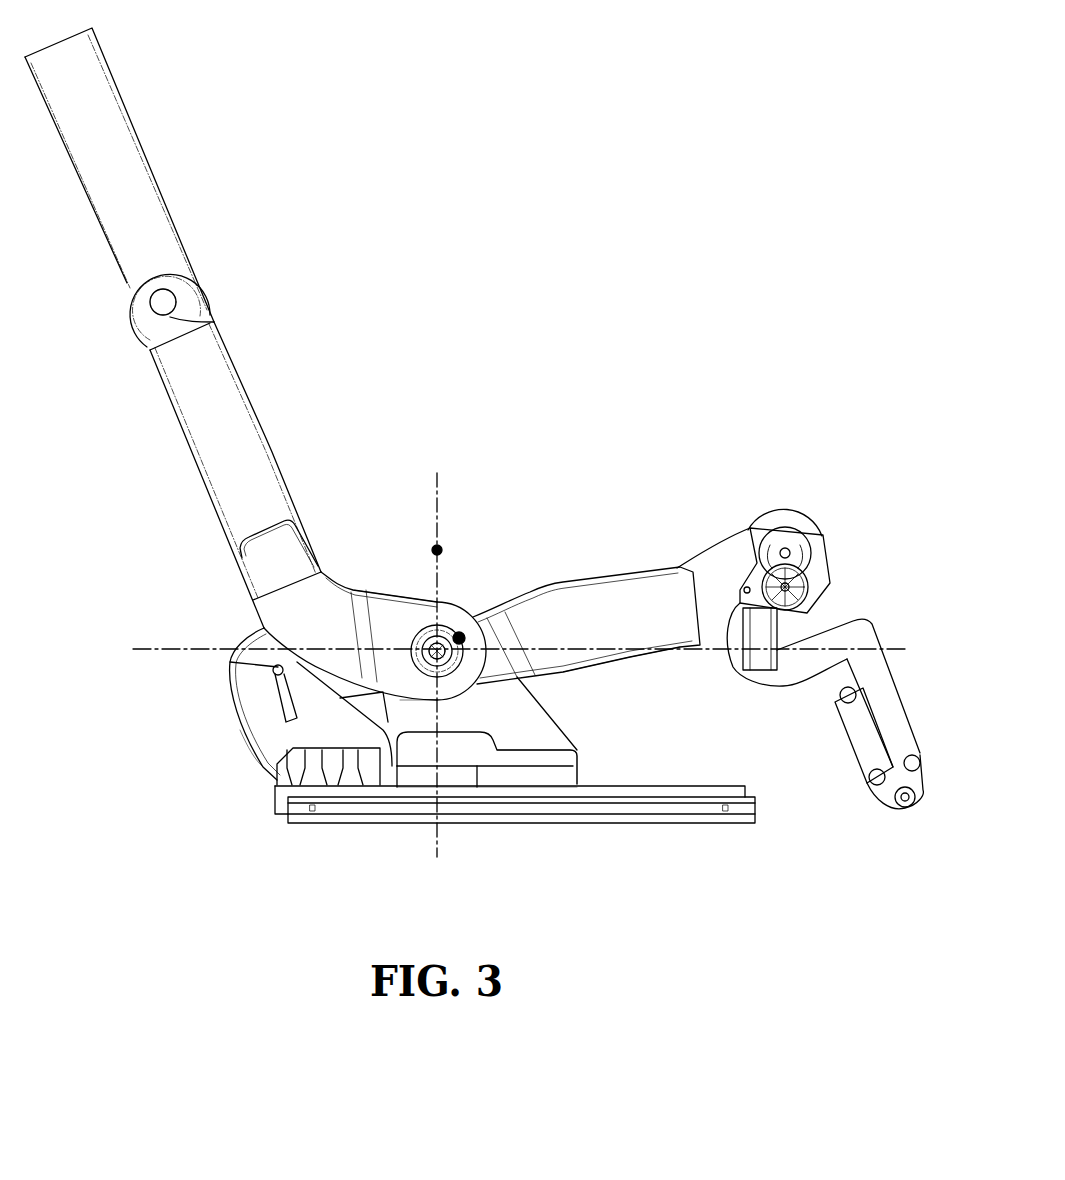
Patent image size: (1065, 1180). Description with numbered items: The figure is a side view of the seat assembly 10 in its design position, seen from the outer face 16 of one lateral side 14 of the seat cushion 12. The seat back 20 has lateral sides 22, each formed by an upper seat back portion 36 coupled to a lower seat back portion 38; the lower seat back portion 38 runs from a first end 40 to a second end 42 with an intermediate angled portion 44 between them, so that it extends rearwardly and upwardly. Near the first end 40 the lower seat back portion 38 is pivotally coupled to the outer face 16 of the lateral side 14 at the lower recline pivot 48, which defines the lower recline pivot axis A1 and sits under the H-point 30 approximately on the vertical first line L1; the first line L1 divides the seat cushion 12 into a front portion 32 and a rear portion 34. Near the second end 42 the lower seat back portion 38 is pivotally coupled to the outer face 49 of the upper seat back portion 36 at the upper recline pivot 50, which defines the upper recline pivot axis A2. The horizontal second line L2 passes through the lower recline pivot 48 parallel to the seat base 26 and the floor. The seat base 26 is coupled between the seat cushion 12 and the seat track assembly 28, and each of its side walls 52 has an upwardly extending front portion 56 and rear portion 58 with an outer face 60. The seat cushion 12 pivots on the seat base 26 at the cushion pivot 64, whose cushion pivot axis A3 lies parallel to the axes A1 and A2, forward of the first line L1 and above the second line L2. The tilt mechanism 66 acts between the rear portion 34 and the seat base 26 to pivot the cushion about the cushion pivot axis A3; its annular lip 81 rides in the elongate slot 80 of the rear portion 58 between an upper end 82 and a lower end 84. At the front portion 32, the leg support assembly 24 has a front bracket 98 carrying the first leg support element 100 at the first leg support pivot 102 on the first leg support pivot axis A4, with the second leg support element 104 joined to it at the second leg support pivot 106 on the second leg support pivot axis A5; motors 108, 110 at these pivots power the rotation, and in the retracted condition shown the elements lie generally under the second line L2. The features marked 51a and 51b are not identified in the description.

The seat assembly 10 is at (392, 268).
The seat cushion 12 is at (613, 503).
The lateral side 14 is at (673, 548).
The outer face 16 is at (586, 625).
The seat back 20 is at (130, 400).
The lateral side 22 is at (155, 428).
The leg support assembly 24 is at (790, 757).
The seat base 26 is at (487, 797).
The seat track assembly 28 is at (526, 813).
The H-point 30 is at (440, 548).
The front portion 32 is at (638, 653).
The rear portion 34 is at (381, 752).
The upper seat back portion 36 is at (128, 103).
The lower seat back portion 38 is at (253, 409).
The first end 40 is at (442, 700).
The second end 42 is at (205, 300).
The intermediate angled portion 44 is at (260, 625).
The lower recline pivot 48 is at (420, 632).
The outer face 49 is at (153, 228).
The upper recline pivot 50 is at (200, 336).
The first surface 51a is at (418, 593).
The second surface 51b is at (148, 299).
The side wall 52 is at (583, 775).
The front portion 56 is at (552, 770).
The rear portion 58 is at (247, 780).
The outer face 60 is at (487, 732).
The cushion pivot 64 is at (463, 633).
The tilt mechanism 66 is at (240, 717).
The elongate slot 80 is at (255, 710).
The annular lip 81 is at (265, 685).
The upper end 82 is at (272, 670).
The lower end 84 is at (263, 773).
The front bracket 98 is at (738, 555).
The first leg support element 100 is at (868, 640).
The first leg support pivot 102 is at (825, 565).
The second leg support element 104 is at (862, 753).
The second leg support pivot 106 is at (925, 805).
The motor 108 is at (812, 594).
The motor 110 is at (925, 793).
The lower recline pivot axis A1 is at (445, 655).
The upper recline pivot axis A2 is at (169, 298).
The cushion pivot axis A3 is at (438, 648).
The first leg support pivot axis A4 is at (789, 551).
The second leg support pivot axis A5 is at (903, 800).
The first line L1 is at (437, 650).
The second line L2 is at (505, 649).